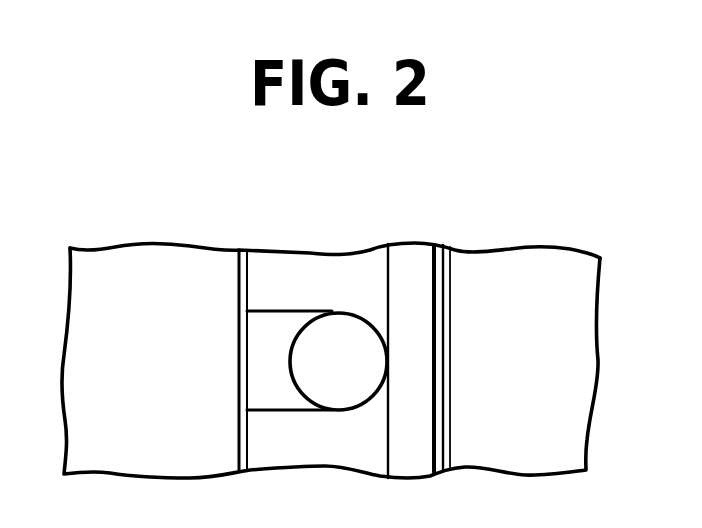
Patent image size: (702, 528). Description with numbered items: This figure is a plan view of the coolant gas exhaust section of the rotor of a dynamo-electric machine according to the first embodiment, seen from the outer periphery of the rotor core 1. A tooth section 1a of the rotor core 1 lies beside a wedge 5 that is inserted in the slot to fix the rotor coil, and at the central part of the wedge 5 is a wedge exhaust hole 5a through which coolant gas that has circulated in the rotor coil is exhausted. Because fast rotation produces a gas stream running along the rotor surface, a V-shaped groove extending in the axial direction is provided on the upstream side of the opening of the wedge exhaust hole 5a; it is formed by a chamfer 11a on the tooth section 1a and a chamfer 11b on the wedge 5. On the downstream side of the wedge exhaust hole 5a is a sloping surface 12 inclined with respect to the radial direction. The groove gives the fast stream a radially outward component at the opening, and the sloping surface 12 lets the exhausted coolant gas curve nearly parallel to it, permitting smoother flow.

The rotor core 1 is at (533, 267).
The tooth section 1a is at (167, 297).
The wedge 5 is at (293, 280).
The wedge exhaust hole 5a is at (338, 337).
The chamfer 11a is at (480, 275).
The chamfer 11b is at (410, 283).
The sloping surface 12 is at (268, 337).